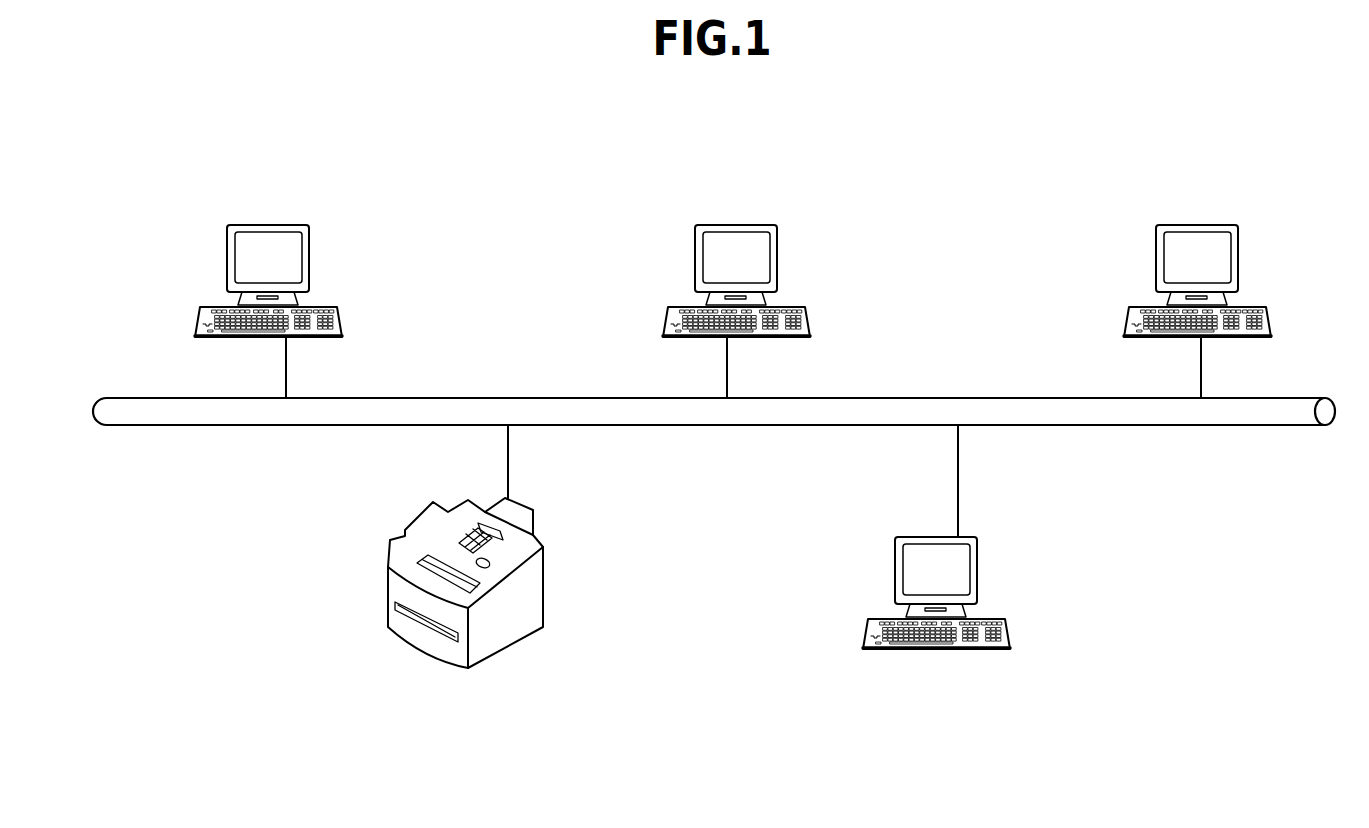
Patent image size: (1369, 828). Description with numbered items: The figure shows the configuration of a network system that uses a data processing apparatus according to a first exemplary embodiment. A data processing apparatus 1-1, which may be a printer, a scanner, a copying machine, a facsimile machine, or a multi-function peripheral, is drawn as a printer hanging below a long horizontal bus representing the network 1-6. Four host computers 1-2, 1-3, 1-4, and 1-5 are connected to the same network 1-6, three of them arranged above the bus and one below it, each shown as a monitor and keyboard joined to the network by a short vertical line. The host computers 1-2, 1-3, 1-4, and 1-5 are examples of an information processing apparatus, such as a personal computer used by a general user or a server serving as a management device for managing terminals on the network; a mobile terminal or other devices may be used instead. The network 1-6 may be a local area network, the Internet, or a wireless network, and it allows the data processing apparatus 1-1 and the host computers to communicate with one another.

The data processing apparatus 1-1 is at (422, 653).
The host computer 1-2 is at (270, 223).
The host computer 1-3 is at (740, 223).
The host computer 1-4 is at (1200, 223).
The host computer 1-5 is at (943, 653).
The network 1-6 is at (1115, 427).